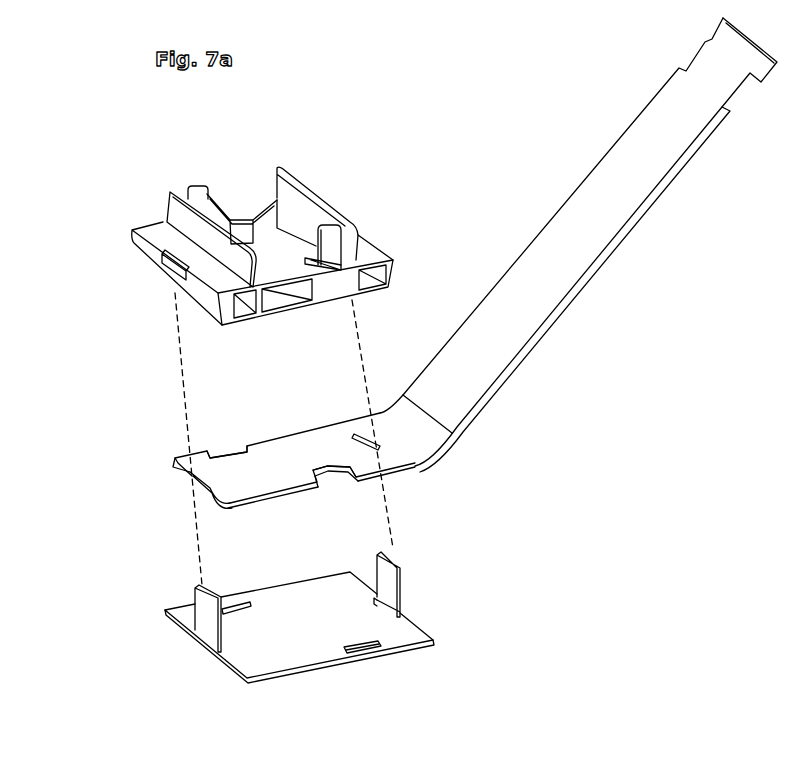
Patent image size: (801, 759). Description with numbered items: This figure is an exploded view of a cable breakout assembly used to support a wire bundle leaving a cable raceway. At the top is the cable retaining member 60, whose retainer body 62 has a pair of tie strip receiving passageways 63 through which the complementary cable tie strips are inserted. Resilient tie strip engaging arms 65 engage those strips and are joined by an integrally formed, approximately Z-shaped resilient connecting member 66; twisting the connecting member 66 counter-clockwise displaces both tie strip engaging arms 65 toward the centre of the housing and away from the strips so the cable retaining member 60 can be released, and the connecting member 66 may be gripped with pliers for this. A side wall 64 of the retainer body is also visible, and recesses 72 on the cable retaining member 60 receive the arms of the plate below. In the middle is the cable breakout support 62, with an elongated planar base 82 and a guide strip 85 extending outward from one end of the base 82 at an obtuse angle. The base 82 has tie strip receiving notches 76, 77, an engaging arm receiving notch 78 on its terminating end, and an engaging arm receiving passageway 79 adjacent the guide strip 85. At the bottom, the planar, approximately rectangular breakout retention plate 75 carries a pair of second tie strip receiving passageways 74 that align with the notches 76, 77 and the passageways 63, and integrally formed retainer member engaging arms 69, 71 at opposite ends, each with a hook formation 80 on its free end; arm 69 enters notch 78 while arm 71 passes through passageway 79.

The cable retaining member 60 is at (254, 231).
The cable breakout support 62 is at (550, 303).
The tie strip receiving passageways 63 is at (337, 270).
The side wall 64 is at (177, 208).
The tie strip engaging arms 65 is at (197, 186).
The connecting member 66 is at (270, 203).
The retainer member engaging arm 69 is at (195, 602).
The retainer member engaging arm 71 is at (403, 590).
The recesses 72 is at (173, 273).
The second tie strip receiving passageways 74 is at (371, 648).
The breakout retention plate 75 is at (304, 630).
The tie strip receiving notch 76 is at (228, 457).
The tie strip receiving notch 77 is at (332, 473).
The engaging arm receiving notch 78 is at (195, 478).
The engaging arm receiving passageway 79 is at (403, 460).
The hook formation 80 is at (213, 592).
The planar base 82 is at (281, 454).
The guide strip 85 is at (567, 217).